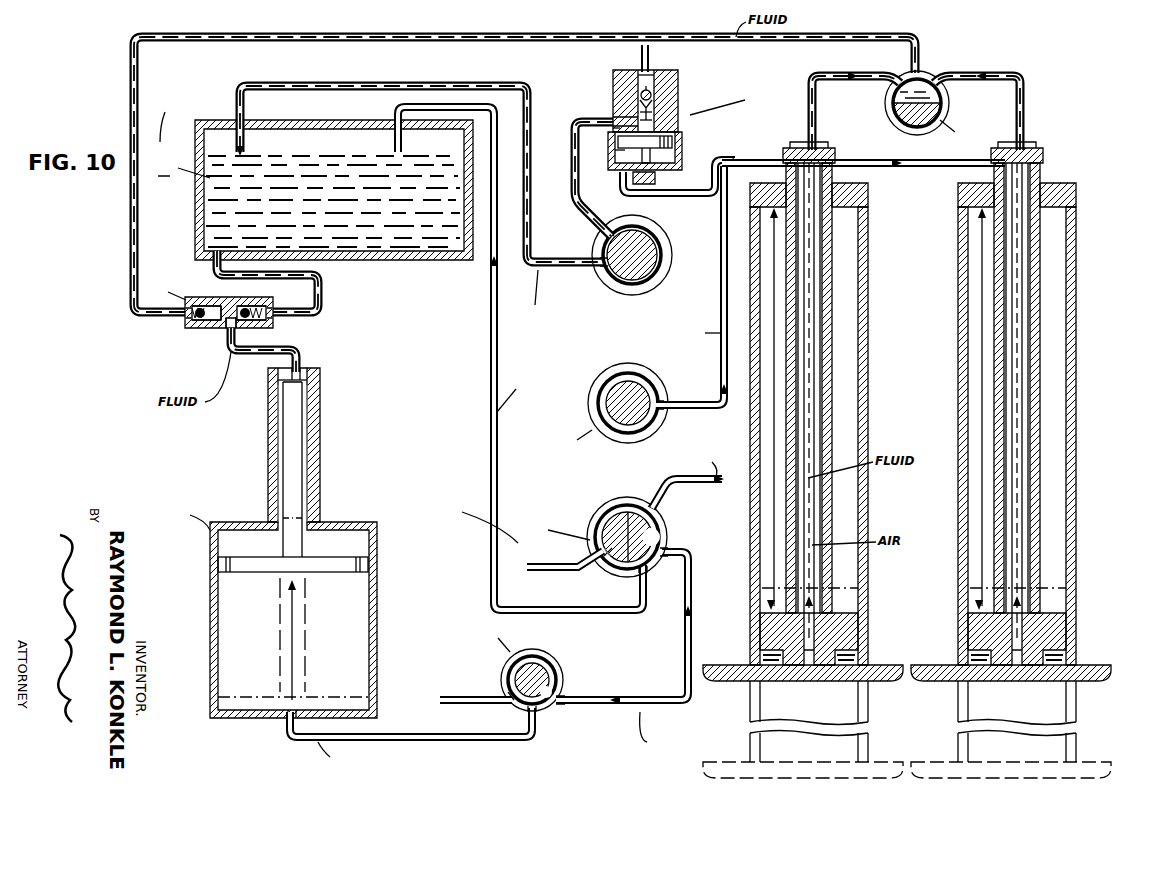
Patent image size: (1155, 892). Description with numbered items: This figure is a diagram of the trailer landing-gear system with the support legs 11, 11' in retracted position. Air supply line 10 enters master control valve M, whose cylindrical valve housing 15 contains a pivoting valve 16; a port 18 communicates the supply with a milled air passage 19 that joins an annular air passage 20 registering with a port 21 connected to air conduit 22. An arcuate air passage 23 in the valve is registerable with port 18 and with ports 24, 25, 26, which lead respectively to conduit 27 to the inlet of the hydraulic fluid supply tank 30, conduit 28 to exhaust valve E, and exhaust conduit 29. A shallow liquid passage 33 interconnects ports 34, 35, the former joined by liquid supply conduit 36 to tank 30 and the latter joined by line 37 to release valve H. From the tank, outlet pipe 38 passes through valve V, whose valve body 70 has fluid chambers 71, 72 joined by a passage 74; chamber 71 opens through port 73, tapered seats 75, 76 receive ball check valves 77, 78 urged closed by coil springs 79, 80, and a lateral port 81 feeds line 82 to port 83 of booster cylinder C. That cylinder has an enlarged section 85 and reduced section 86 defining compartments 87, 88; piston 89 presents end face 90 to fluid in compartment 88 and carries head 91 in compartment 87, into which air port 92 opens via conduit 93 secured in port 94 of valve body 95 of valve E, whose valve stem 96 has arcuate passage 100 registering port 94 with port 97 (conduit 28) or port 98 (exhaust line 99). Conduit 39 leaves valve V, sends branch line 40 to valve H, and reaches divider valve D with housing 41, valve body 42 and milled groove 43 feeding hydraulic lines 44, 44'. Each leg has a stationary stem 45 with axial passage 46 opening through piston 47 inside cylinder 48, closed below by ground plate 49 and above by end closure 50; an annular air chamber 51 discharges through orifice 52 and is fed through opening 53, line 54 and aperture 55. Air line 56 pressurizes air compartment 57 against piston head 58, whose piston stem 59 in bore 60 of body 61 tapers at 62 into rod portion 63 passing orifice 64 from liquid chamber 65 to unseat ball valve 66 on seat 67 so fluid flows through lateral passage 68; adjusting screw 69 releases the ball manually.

The air supply line 10 is at (552, 565).
The support leg 11 is at (825, 436).
The support leg 11' is at (1013, 460).
The valve housing 15 is at (598, 510).
The valve 16 is at (612, 505).
The port 18 is at (608, 562).
The air passage 19 is at (604, 535).
The annular air passage 20 is at (645, 385).
The port 21 is at (662, 400).
The air conduit 22 is at (688, 418).
The arcuate air passage 23 is at (660, 535).
The port 24 is at (632, 570).
The port 25 is at (672, 550).
The port 26 is at (630, 500).
The conduit 27 is at (487, 420).
The conduit 28 is at (686, 640).
The conduit 29 is at (680, 482).
The supply tank 30 is at (395, 260).
The liquid passage 33 is at (608, 285).
The port 34 is at (596, 270).
The port 35 is at (612, 232).
The liquid supply conduit 36 is at (484, 82).
The line 37 is at (572, 172).
The outlet pipe 38 is at (322, 298).
The conduit 39 is at (130, 255).
The branch line 40 is at (641, 62).
The housing 41 is at (895, 118).
The valve body 42 is at (917, 135).
The milled groove 43 is at (922, 75).
The hydraulic line 44 is at (856, 111).
The hydraulic line 44' is at (977, 111).
The stem 45 is at (834, 262).
The axial passage 46 is at (806, 312).
The piston 47 is at (850, 630).
The cylinder 48 is at (864, 524).
The ground plate 49 is at (876, 678).
The end closure 50 is at (865, 198).
The annular air chamber 51 is at (820, 420).
The orifice 52 is at (775, 612).
The opening 53 is at (787, 150).
The line 54 is at (938, 168).
The aperture 55 is at (832, 150).
The air line 56 is at (672, 195).
The air compartment 57 is at (670, 150).
The piston head 58 is at (678, 140).
The piston stem 59 is at (660, 125).
The bore 60 is at (672, 105).
The body 61 is at (670, 85).
The tapered portion 62 is at (617, 140).
The rod portion 63 is at (640, 105).
The orifice 64 is at (613, 116).
The liquid chamber 65 is at (640, 95).
The ball valve 66 is at (662, 90).
The valve seat 67 is at (636, 100).
The lateral passage 68 is at (615, 128).
The adjusting screw 69 is at (657, 178).
The valve body 70 is at (275, 322).
The fluid chamber 71 is at (238, 306).
The fluid chamber 72 is at (196, 300).
The port 73 is at (272, 308).
The passage 74 is at (215, 306).
The tapered valve seat 75 is at (258, 306).
The tapered valve seat 76 is at (228, 325).
The ball check valve 77 is at (278, 332).
The ball check valve 78 is at (200, 323).
The coil spring 79 is at (240, 335).
The coil spring 80 is at (188, 318).
The lateral port 81 is at (228, 340).
The line 82 is at (300, 358).
The port 83 is at (322, 382).
The enlarged section 85 is at (378, 548).
The reduced section 86 is at (320, 475).
The compartment 87 is at (365, 615).
The compartment 88 is at (270, 488).
The piston 89 is at (300, 445).
The end face 90 is at (278, 400).
The head 91 is at (215, 564).
The air port 92 is at (274, 722).
The air conduit 93 is at (440, 742).
The port 94 is at (540, 706).
The valve body 95 is at (553, 656).
The valve stem 96 is at (532, 652).
The port 97 is at (565, 684).
The port 98 is at (510, 680).
The exhaust line 99 is at (460, 688).
The arcuate passage 100 is at (560, 668).